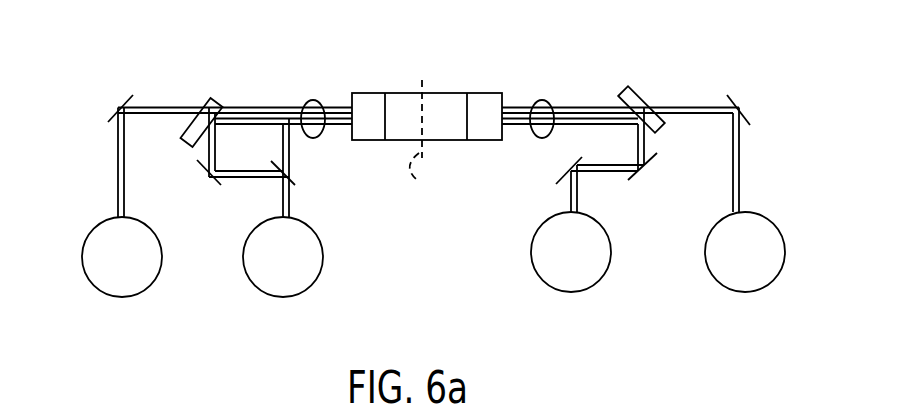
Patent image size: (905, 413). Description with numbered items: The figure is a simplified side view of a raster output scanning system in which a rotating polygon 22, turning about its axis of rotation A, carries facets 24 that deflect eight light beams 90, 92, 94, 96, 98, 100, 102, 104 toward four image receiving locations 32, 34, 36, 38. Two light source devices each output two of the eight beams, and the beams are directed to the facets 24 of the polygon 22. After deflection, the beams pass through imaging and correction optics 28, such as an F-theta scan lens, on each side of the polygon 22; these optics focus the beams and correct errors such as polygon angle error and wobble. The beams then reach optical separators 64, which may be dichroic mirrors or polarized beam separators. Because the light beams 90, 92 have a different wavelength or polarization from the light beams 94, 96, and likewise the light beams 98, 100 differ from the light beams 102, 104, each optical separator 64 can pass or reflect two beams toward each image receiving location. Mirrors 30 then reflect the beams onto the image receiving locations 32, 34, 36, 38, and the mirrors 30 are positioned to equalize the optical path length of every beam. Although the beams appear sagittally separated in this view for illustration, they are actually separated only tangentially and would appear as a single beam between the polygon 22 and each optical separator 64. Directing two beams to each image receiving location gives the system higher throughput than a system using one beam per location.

The rotating polygon 22 is at (453, 93).
The facets 24 is at (372, 140).
The imaging and correction optics 28 is at (318, 101).
The mirrors 30 is at (114, 110).
The image receiving location 32 is at (137, 285).
The image receiving location 34 is at (282, 290).
The image receiving location 36 is at (556, 280).
The image receiving location 38 is at (732, 278).
The optical separator 64 is at (206, 95).
The light beam 90 is at (158, 107).
The light beam 92 is at (172, 117).
The light beam 94 is at (263, 123).
The light beam 96 is at (286, 124).
The light beam 98 is at (683, 105).
The light beam 100 is at (692, 113).
The light beam 102 is at (575, 121).
The light beam 104 is at (588, 126).
The axis of rotation A is at (419, 138).